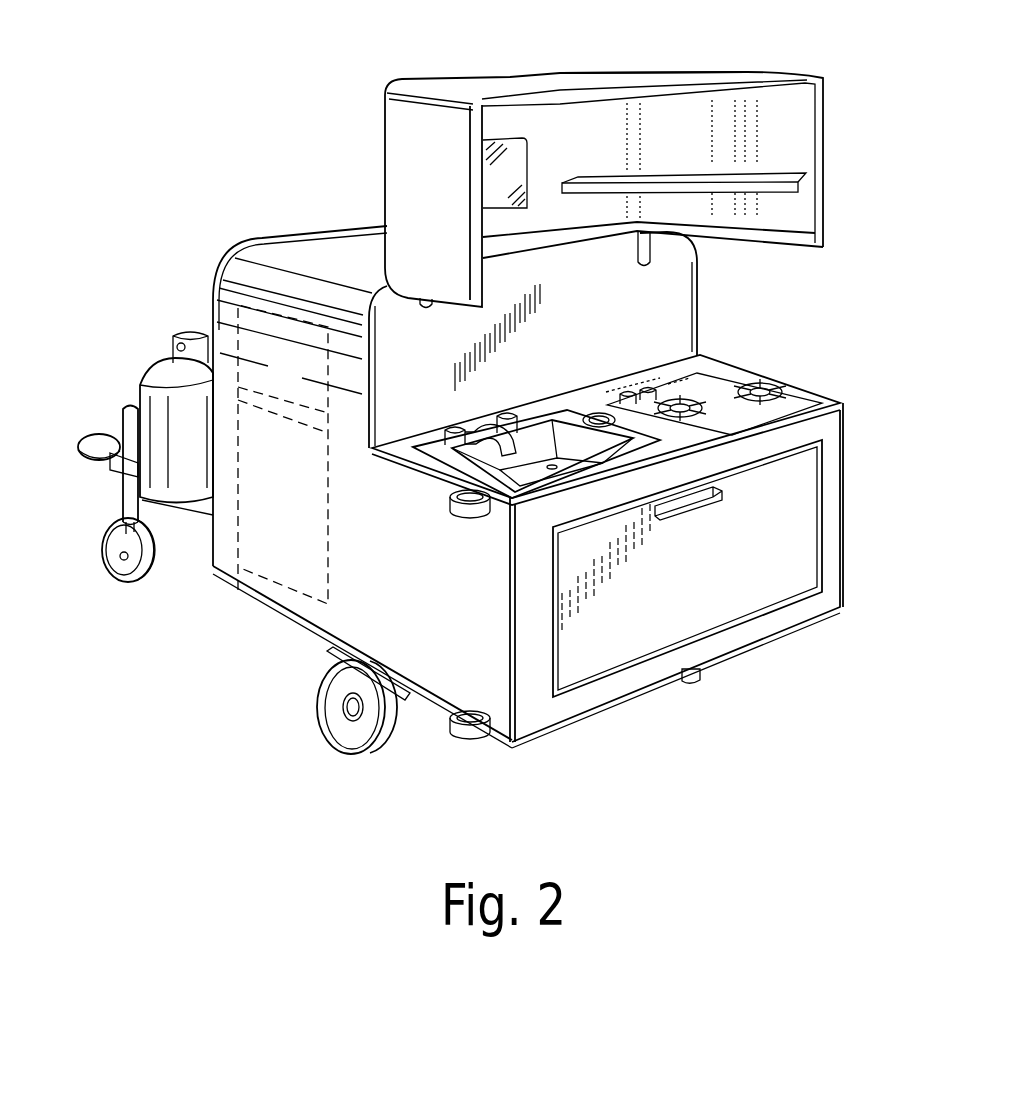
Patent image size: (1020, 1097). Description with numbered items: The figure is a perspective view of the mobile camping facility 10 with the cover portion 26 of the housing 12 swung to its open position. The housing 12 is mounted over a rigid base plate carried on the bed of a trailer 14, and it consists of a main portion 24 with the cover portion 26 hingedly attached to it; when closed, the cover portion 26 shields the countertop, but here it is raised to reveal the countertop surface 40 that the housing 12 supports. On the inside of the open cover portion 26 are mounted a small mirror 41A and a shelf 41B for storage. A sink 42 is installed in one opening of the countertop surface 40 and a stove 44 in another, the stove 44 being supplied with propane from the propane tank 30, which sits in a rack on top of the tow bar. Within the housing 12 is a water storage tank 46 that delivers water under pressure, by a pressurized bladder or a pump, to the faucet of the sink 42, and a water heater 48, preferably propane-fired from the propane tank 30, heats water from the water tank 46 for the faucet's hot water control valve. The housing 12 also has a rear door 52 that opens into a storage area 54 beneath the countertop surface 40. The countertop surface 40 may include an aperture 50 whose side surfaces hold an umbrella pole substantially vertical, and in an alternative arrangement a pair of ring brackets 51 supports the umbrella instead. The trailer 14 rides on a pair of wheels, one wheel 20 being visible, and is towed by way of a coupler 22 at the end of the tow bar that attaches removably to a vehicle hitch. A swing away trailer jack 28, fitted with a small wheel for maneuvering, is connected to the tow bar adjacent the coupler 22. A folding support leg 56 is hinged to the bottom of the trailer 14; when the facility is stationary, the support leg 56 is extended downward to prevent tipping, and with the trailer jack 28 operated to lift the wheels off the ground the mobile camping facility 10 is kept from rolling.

The mobile camping facility 10 is at (330, 42).
The housing 12 is at (473, 57).
The trailer 14 is at (140, 607).
The wheel 20 is at (330, 705).
The coupler 22 is at (104, 440).
The main portion 24 is at (298, 230).
The cover portion 26 is at (754, 72).
The swing away trailer jack 28 is at (122, 493).
The propane tank 30 is at (165, 375).
The countertop surface 40 is at (842, 398).
The small mirror 41A is at (512, 158).
The shelf 41B is at (740, 179).
The sink 42 is at (520, 470).
The stove 44 is at (758, 385).
The water storage tank 46 is at (266, 322).
The water heater 48 is at (265, 548).
The aperture 50 is at (598, 414).
The ring brackets 51 is at (468, 512).
The rear door 52 is at (808, 493).
The storage area 54 is at (796, 556).
The folding support leg 56 is at (702, 676).